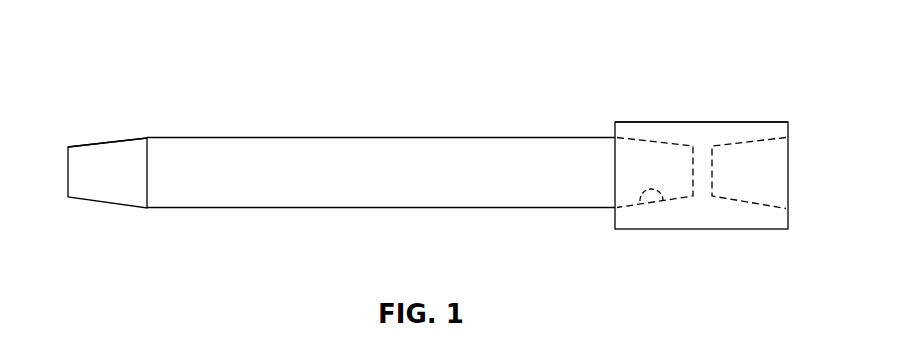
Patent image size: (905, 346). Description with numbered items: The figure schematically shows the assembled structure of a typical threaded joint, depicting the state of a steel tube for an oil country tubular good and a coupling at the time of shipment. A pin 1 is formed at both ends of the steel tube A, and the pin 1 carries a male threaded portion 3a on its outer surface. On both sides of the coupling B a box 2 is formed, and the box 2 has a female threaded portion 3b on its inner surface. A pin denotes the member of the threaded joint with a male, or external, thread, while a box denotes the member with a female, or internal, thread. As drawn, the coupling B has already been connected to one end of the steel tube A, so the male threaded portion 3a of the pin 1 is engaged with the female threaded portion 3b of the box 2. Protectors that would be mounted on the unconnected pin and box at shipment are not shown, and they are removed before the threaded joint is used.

The pin 1 is at (116, 126).
The box 2 is at (653, 104).
The male threaded portion 3a is at (96, 142).
The female threaded portion 3b is at (665, 201).
The steel tube A is at (380, 86).
The coupling B is at (699, 70).